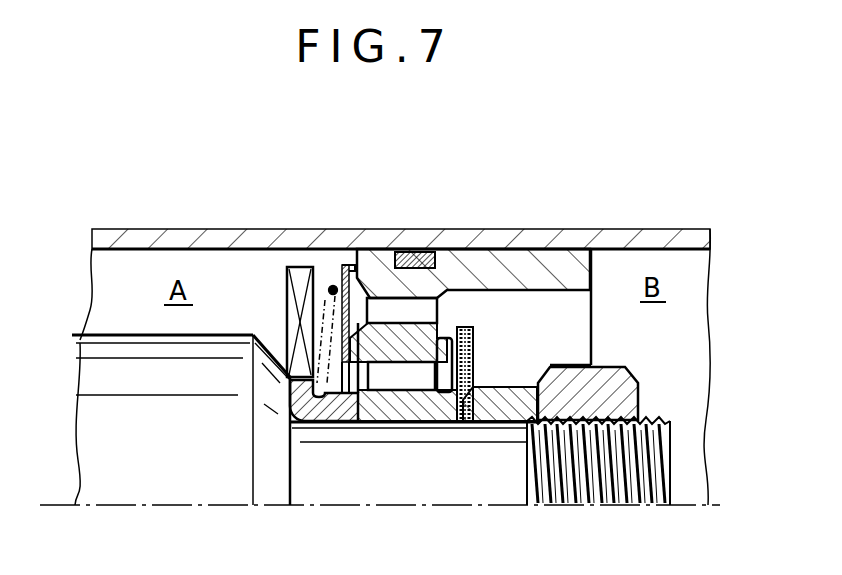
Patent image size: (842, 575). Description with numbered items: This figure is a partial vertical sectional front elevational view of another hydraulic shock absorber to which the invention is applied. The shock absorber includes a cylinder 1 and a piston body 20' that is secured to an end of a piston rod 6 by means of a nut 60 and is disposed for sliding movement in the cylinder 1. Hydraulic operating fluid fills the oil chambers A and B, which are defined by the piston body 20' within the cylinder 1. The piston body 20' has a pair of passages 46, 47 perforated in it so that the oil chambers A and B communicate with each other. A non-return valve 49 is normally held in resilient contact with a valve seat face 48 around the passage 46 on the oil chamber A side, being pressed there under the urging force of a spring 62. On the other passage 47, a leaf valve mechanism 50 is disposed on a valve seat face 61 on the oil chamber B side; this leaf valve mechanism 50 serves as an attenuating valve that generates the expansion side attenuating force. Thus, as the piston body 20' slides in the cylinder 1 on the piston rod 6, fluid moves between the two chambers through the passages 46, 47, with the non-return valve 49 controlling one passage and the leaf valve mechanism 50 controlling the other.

The cylinder 1 is at (150, 242).
The piston rod 6 is at (176, 473).
The piston body 20' is at (474, 273).
The passage 46 is at (412, 312).
The passage 47 is at (411, 423).
The valve seat face 48 is at (358, 427).
The non-return valve 49 is at (345, 272).
The leaf valve mechanism 50 is at (464, 427).
The nut 60 is at (612, 383).
The valve seat face 61 is at (447, 328).
The spring 62 is at (330, 286).